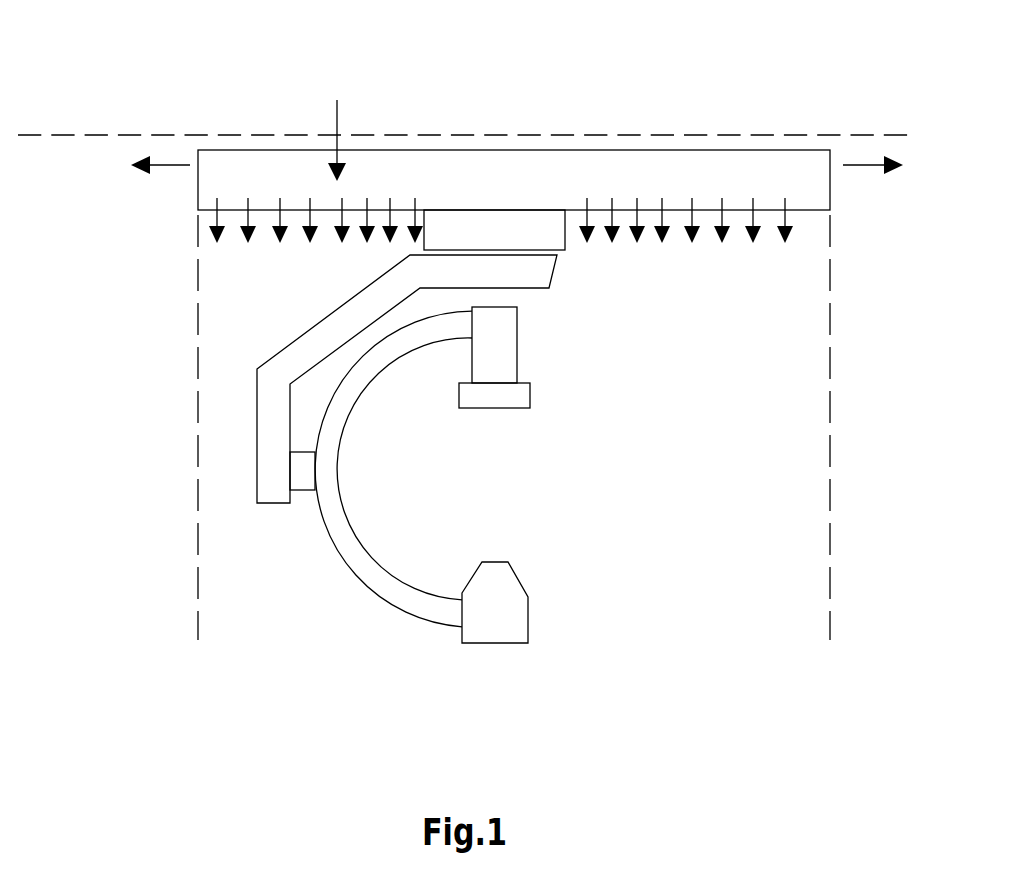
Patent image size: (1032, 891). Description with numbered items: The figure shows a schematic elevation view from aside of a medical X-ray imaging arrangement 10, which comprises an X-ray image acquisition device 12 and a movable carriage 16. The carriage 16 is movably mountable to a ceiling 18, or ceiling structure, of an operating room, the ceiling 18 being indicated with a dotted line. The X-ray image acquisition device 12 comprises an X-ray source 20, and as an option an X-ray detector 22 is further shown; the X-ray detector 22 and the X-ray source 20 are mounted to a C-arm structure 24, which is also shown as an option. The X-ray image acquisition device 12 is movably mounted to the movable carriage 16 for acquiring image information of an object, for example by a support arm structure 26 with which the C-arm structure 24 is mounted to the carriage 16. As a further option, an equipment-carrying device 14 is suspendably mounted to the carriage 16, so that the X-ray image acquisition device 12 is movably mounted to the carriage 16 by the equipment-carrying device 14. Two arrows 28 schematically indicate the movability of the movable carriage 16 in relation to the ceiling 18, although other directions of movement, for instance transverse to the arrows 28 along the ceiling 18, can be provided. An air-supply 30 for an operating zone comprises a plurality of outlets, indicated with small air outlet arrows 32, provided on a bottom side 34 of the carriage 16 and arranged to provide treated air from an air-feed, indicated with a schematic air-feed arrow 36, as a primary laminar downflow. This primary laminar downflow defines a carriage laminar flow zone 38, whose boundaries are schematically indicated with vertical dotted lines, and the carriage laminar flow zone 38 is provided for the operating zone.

The medical X-ray imaging arrangement 10 is at (842, 385).
The X-ray image acquisition device 12 is at (576, 468).
The equipment-carrying device 14 is at (535, 228).
The movable carriage 16 is at (726, 166).
The ceiling 18 is at (858, 135).
The X-ray source 20 is at (510, 588).
The X-ray detector 22 is at (522, 388).
The C-arm structure 24 is at (378, 583).
The support arm structure 26 is at (270, 366).
The arrows 28 is at (165, 165).
The air-supply 30 is at (148, 212).
The air outlet arrows 32 is at (247, 219).
The bottom side 34 is at (295, 210).
The air-feed arrow 36 is at (337, 125).
The carriage laminar flow zone 38 is at (199, 541).